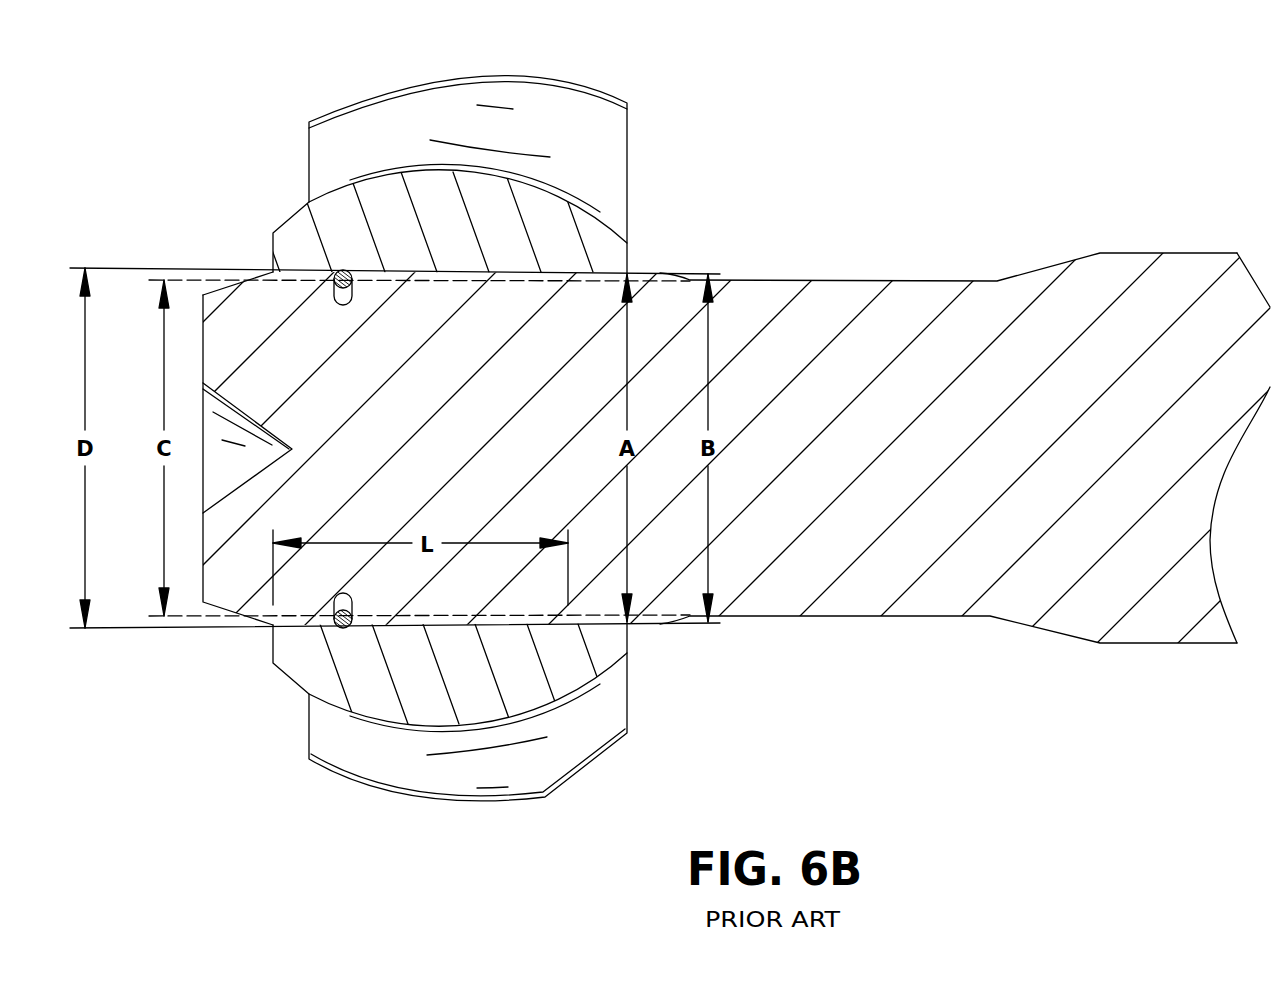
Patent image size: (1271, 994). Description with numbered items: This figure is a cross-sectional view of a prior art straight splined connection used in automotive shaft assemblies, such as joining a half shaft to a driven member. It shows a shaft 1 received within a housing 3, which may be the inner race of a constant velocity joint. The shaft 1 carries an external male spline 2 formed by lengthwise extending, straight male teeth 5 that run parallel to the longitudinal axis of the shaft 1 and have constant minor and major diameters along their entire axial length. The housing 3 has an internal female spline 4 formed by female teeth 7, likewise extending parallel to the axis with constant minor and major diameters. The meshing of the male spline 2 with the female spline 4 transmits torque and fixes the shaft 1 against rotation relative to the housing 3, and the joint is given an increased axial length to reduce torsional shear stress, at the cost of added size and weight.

The shaft 1 is at (847, 281).
The male spline 2 is at (643, 272).
The housing 3 is at (560, 92).
The female spline 4 is at (452, 280).
The male teeth 5 is at (652, 619).
The female teeth 7 is at (346, 331).